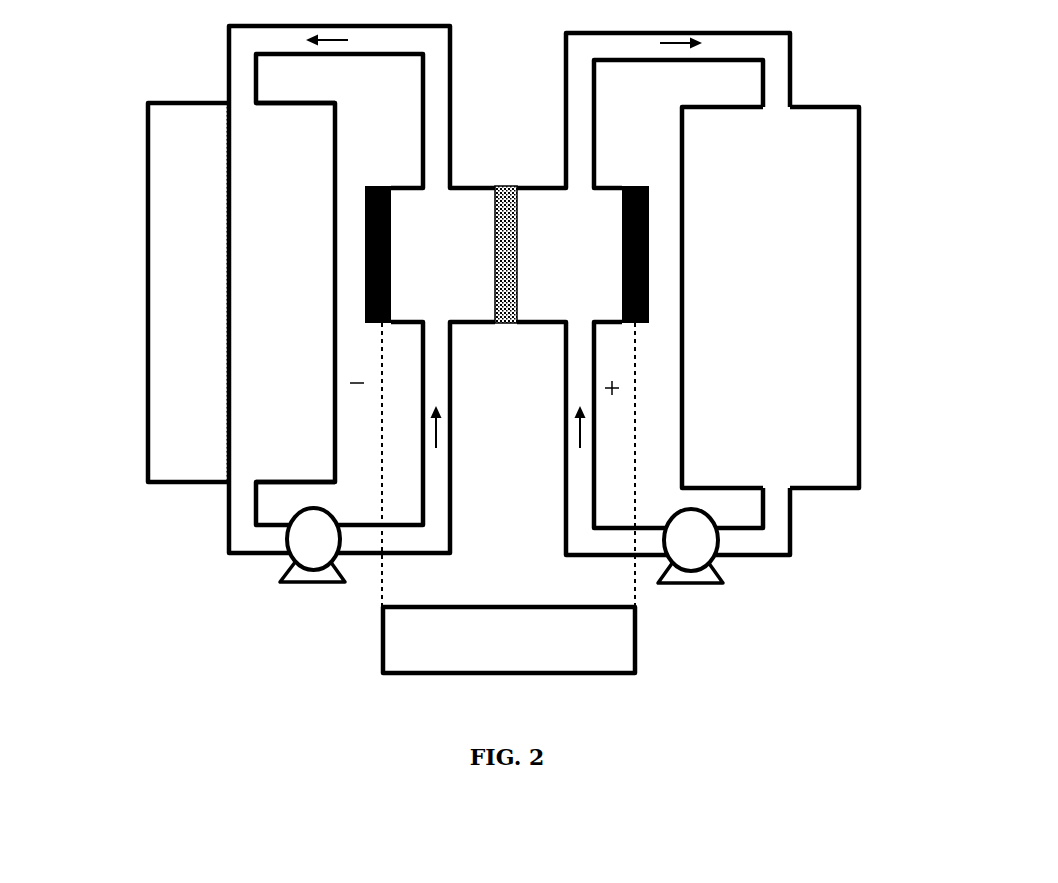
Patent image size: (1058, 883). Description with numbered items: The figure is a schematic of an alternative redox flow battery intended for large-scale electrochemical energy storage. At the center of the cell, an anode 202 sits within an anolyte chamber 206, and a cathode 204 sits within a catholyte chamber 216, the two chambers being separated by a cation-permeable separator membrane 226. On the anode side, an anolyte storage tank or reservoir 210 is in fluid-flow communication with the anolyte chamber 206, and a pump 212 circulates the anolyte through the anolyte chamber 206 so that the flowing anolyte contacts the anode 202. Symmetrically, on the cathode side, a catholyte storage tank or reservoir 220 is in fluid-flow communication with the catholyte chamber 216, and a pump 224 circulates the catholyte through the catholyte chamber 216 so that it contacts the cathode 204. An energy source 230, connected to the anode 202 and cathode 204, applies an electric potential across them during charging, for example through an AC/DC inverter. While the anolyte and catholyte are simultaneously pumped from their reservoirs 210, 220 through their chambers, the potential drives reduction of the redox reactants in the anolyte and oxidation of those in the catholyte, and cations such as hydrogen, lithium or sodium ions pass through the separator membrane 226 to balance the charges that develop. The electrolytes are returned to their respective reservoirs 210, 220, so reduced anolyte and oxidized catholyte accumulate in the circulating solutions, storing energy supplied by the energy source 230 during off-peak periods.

The anode 202 is at (378, 187).
The cathode 204 is at (637, 185).
The anolyte chamber 206 is at (458, 207).
The anolyte storage tank or reservoir 210 is at (168, 210).
The pump 212 is at (305, 543).
The catholyte chamber 216 is at (557, 297).
The catholyte storage tank or reservoir 220 is at (835, 220).
The pump 224 is at (703, 547).
The cation-permeable separator membrane 226 is at (503, 187).
The energy source 230 is at (602, 652).